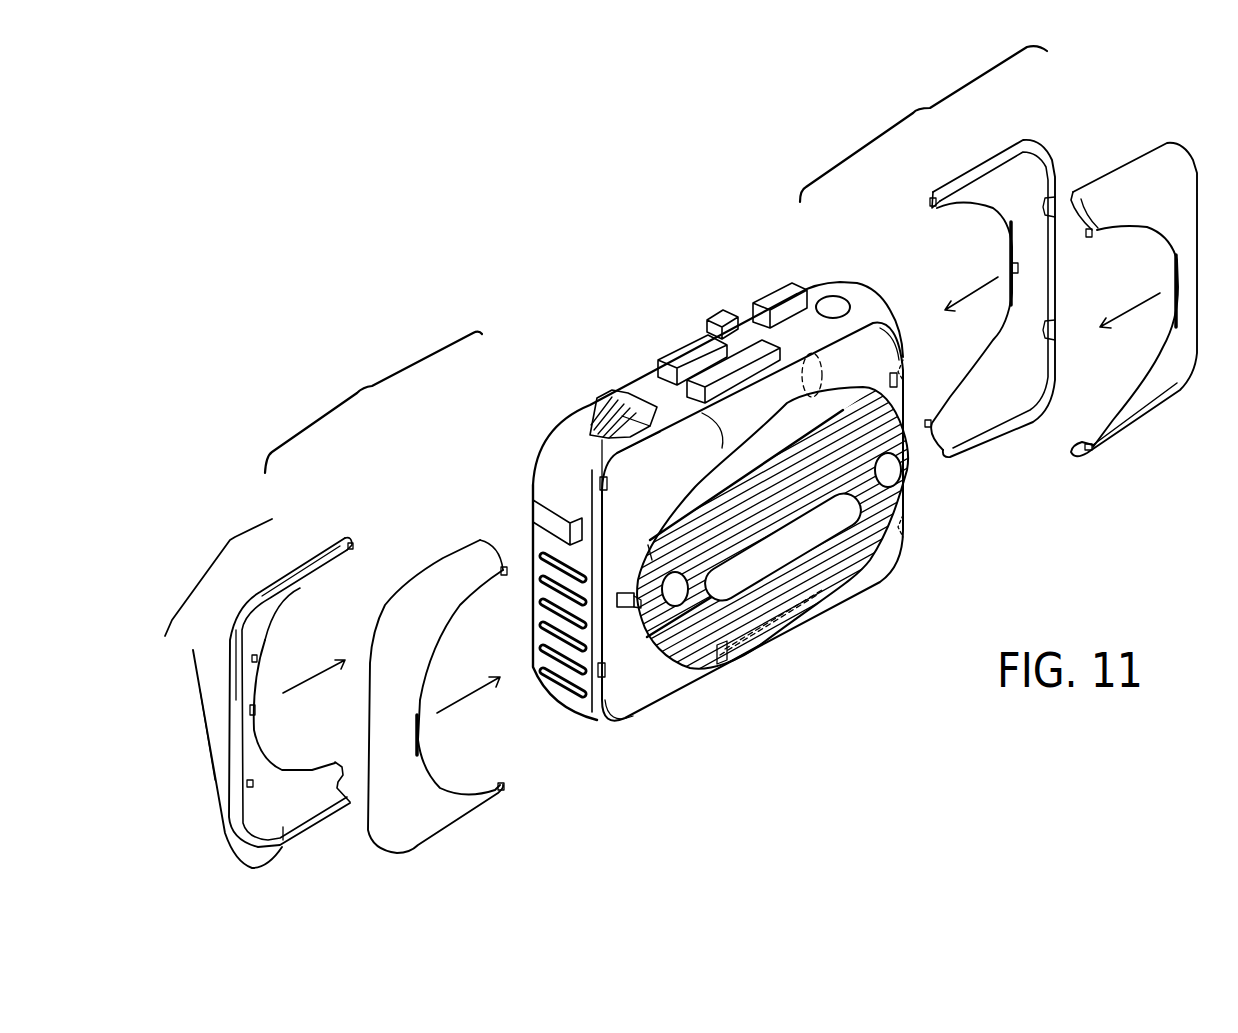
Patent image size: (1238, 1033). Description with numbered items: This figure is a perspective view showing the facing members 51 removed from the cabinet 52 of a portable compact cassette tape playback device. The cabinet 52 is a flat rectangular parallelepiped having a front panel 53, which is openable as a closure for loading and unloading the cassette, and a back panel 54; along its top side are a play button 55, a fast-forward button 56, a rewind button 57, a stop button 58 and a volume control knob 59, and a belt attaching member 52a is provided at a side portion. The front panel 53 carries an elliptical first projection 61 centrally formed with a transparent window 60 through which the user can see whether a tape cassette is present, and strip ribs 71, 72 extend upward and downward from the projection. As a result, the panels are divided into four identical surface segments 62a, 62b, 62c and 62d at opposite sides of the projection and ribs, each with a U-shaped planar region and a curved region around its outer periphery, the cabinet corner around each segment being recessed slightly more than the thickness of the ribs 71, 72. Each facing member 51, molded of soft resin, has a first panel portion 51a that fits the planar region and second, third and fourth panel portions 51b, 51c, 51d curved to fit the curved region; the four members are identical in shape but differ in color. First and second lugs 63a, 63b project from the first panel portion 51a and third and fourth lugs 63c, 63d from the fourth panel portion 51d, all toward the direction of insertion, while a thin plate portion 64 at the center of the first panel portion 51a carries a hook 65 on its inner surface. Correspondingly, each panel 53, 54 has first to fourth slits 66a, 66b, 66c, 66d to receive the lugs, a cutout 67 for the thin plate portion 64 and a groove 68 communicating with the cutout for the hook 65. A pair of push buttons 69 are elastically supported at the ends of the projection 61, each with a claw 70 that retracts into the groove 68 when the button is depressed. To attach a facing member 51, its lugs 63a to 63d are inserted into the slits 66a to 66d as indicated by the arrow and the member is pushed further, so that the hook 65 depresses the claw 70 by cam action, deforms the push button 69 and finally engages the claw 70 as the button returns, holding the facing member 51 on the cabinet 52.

The facing member 51 is at (1150, 165).
The first panel portion 51a is at (270, 606).
The second panel portion 51b is at (283, 573).
The third panel portion 51c is at (198, 652).
The fourth panel portion 51d is at (238, 637).
The cabinet 52 is at (533, 477).
The belt attaching member 52a is at (540, 512).
The front panel 53 is at (895, 338).
The back panel 54 is at (545, 449).
The play button 55 is at (718, 326).
The fast-forward button 56 is at (692, 350).
The rewind button 57 is at (742, 330).
The stop button 58 is at (783, 297).
The volume control knob 59 is at (592, 398).
The transparent window 60 is at (762, 580).
The first projection 61 is at (845, 582).
The surface segment 62a is at (893, 548).
The surface segment 62b is at (631, 706).
The surface segment 62c is at (793, 290).
The surface segment 62d is at (553, 417).
The first lug 63a is at (352, 550).
The second lug 63b is at (337, 763).
The third lug 63c is at (260, 662).
The fourth lug 63d is at (253, 785).
The thin plate portion 64 is at (255, 690).
The hook 65 is at (255, 712).
The first slit 66a is at (722, 446).
The second slit 66b is at (598, 478).
The third slit 66c is at (605, 670).
The fourth slit 66d is at (747, 667).
The cutout 67 is at (652, 562).
The groove 68 is at (631, 608).
The push button 69 is at (680, 600).
The claw 70 is at (628, 592).
The strip rib 71 is at (646, 378).
The strip rib 72 is at (737, 667).